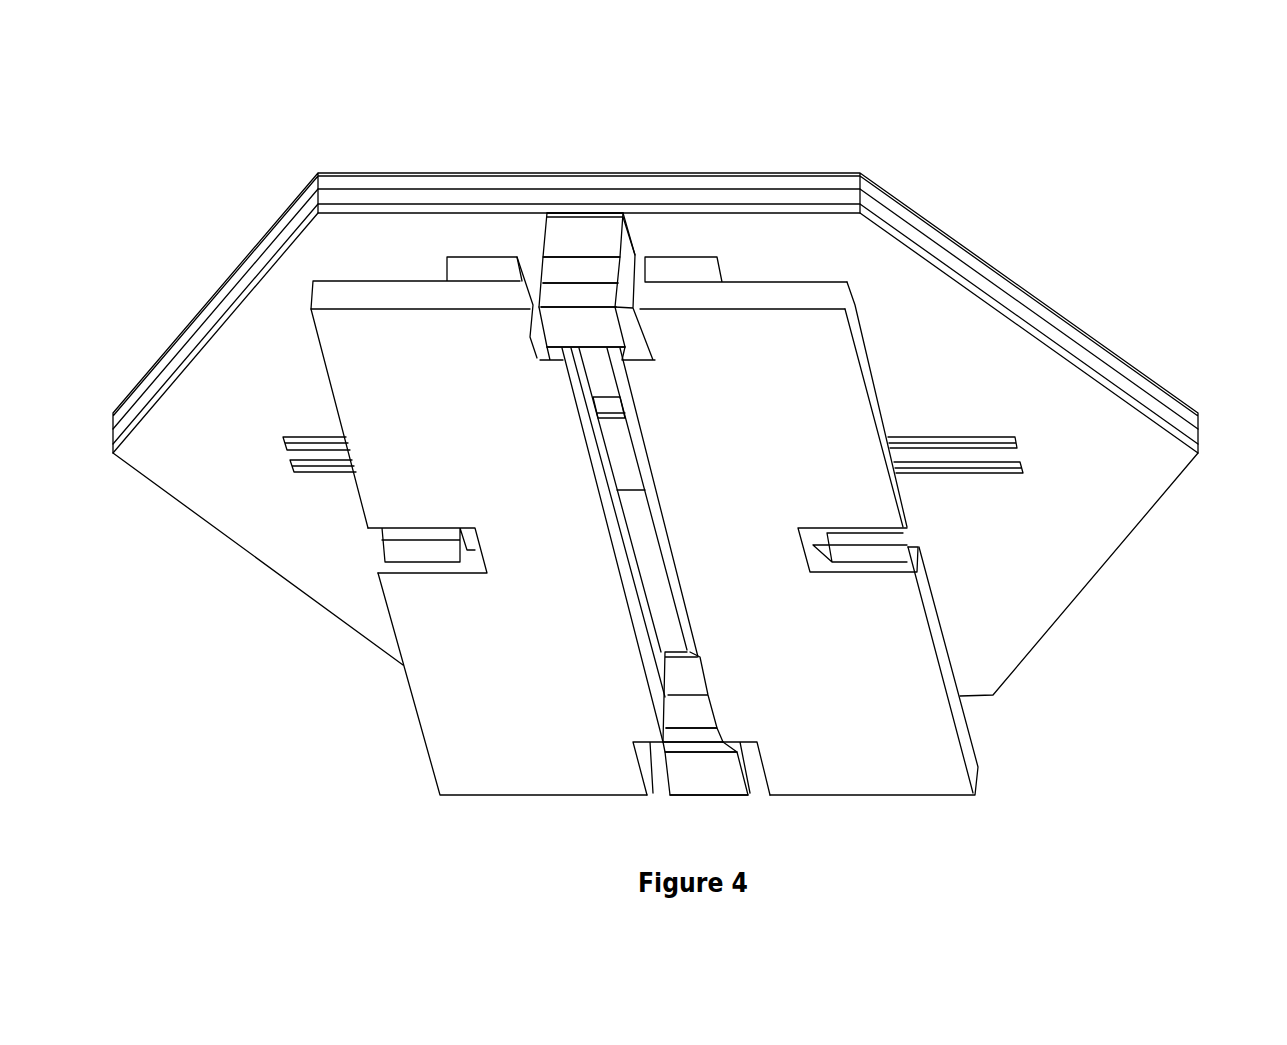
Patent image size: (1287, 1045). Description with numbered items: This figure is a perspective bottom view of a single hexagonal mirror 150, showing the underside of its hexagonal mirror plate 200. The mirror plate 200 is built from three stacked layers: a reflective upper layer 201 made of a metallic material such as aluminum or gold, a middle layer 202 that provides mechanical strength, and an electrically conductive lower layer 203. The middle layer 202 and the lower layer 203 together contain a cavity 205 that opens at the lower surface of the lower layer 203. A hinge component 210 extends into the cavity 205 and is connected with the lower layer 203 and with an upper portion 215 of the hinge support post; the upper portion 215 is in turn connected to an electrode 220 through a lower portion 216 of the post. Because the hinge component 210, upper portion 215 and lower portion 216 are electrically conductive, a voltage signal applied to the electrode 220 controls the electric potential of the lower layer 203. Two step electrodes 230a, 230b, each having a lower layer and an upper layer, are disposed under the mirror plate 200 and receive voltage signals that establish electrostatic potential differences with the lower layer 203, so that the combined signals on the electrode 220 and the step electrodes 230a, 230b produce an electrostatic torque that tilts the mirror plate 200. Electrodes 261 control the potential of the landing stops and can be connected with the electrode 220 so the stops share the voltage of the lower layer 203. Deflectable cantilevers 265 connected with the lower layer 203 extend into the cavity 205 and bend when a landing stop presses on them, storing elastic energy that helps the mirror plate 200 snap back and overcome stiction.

The hexagonal mirror 150 is at (202, 93).
The hexagonal mirror plate 200 is at (1031, 285).
The reflective upper layer 201 is at (1128, 370).
The middle layer 202 is at (1172, 410).
The lower layer 203 is at (1027, 602).
The cavity 205 is at (640, 194).
The hinge component 210 is at (597, 213).
The upper portion of hinge support post 215 is at (604, 250).
The lower portion of hinge support post 216 is at (555, 270).
The electrode 220 is at (550, 298).
The step electrode 230a is at (705, 263).
The step electrode 230b is at (473, 262).
The electrode 261 is at (421, 548).
The deflectable cantilever 265 is at (308, 453).